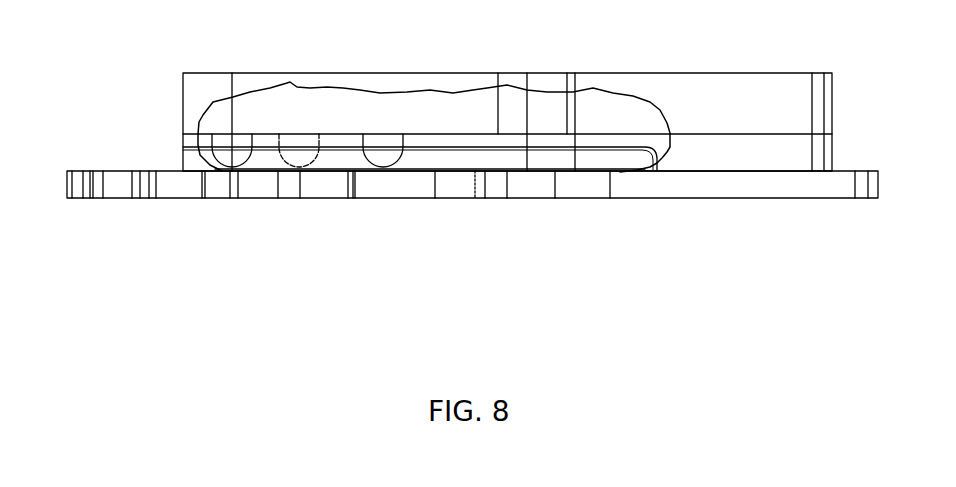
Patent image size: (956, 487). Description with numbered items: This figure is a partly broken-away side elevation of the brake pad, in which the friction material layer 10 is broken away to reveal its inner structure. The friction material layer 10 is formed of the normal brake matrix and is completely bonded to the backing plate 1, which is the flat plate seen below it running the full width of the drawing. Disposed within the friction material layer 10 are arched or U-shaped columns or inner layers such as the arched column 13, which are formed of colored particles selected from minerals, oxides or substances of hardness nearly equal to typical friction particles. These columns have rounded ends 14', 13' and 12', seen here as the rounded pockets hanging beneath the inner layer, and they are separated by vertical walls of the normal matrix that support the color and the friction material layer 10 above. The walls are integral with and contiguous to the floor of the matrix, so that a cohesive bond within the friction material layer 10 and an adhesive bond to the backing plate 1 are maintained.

The backing plate 1 is at (695, 187).
The friction material layer 10 is at (663, 92).
The arched column or inner layer 13 is at (420, 211).
The rounded end 14' is at (212, 206).
The rounded end 13' is at (307, 204).
The rounded end 12' is at (412, 204).